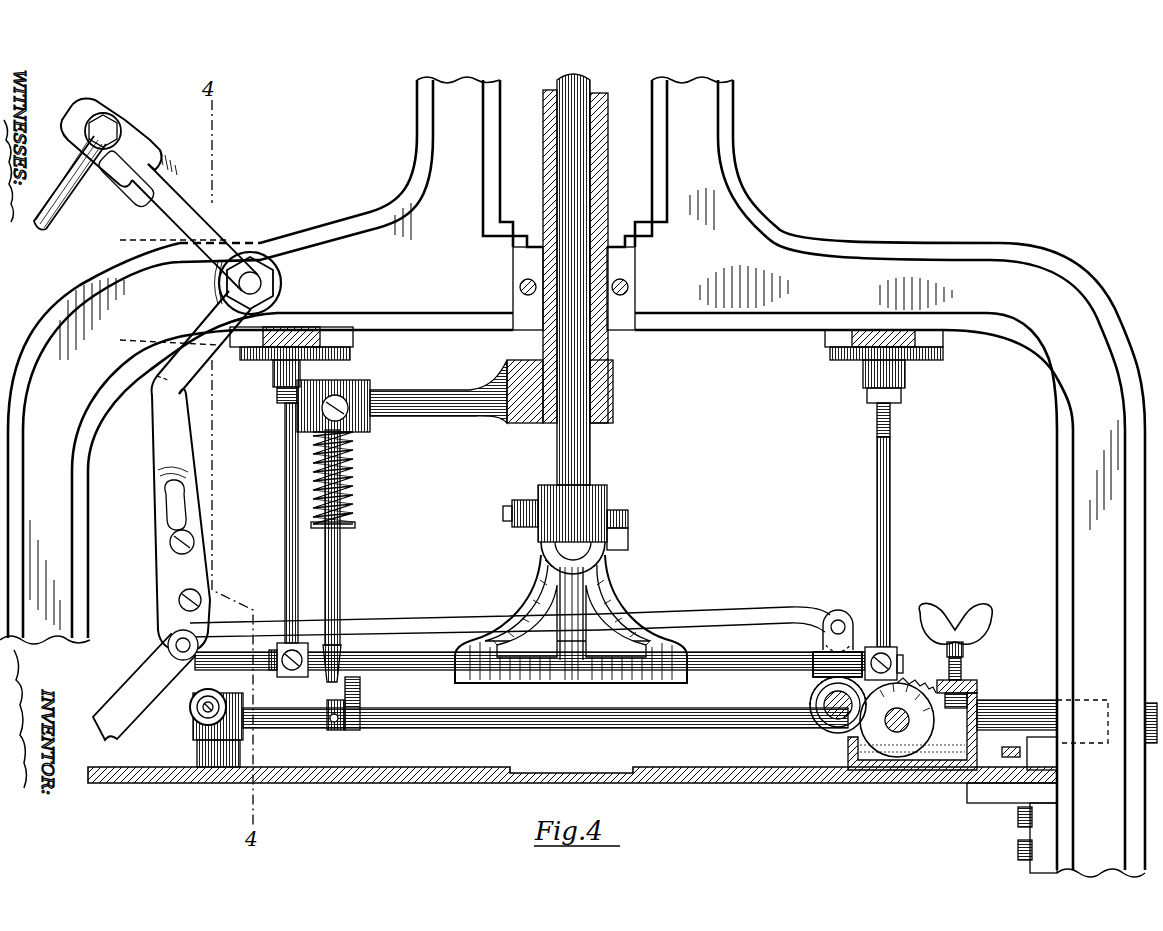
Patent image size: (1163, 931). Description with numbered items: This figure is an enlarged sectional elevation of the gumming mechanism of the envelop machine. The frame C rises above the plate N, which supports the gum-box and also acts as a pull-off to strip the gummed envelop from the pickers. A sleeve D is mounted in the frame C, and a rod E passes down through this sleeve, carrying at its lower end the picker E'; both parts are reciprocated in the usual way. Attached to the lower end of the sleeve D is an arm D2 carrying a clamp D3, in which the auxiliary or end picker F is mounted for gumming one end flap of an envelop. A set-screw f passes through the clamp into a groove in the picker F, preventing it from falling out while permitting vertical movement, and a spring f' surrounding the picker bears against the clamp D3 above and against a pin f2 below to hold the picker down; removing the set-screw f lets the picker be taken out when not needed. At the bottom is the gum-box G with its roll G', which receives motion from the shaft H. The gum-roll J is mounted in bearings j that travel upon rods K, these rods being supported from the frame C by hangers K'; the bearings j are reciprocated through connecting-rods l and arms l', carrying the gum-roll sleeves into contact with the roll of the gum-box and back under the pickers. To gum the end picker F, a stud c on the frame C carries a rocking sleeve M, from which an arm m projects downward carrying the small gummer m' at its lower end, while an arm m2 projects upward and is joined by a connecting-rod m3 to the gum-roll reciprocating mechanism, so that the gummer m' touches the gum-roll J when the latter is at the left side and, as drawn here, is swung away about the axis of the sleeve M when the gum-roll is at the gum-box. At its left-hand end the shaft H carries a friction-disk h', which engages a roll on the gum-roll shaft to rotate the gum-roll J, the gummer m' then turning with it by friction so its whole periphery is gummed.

The frame C is at (572, 477).
The plate N is at (752, 784).
The sleeve D is at (586, 279).
The arm D2 is at (452, 400).
The clamp D3 is at (337, 392).
The set-screw f is at (341, 477).
The spring f' is at (348, 478).
The pin f2 is at (356, 526).
The auxiliary or end picker F is at (340, 574).
The rod E is at (565, 510).
The picker E' is at (571, 619).
The connecting-rod l is at (521, 621).
The rod K is at (530, 670).
The bearing j is at (837, 664).
The hanger K' is at (585, 520).
The shaft H is at (739, 729).
The friction-disk h' is at (353, 702).
The gummer m' is at (200, 728).
The arm l' is at (144, 687).
The arm m is at (186, 475).
The rocking sleeve M is at (262, 265).
The stud c is at (256, 290).
The arm m2 is at (159, 195).
The connecting-rod m3 is at (70, 183).
The gum-roll J is at (818, 733).
The roll G' is at (898, 746).
The gum-box G is at (906, 686).